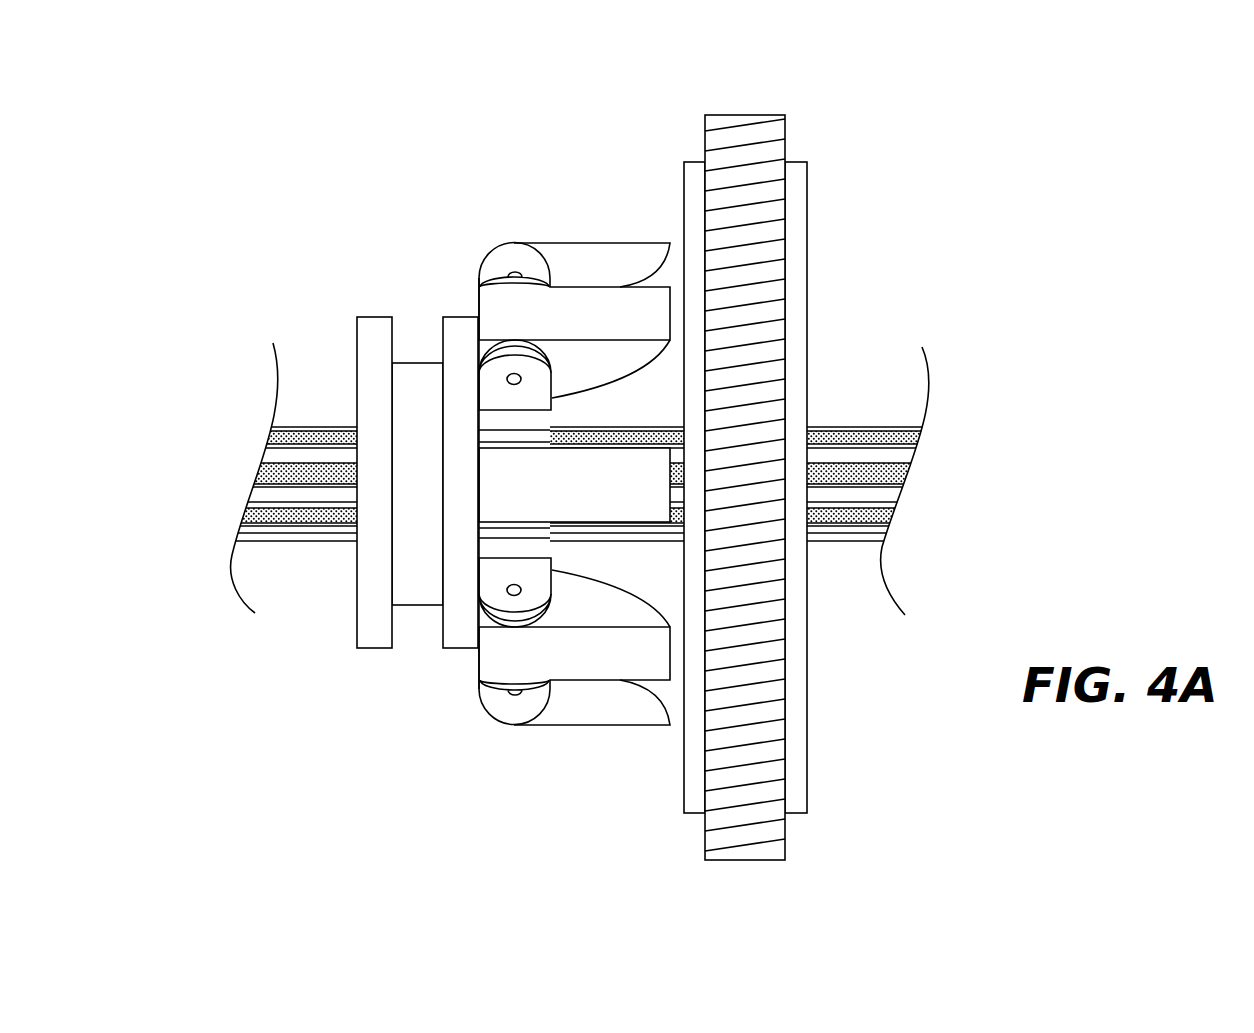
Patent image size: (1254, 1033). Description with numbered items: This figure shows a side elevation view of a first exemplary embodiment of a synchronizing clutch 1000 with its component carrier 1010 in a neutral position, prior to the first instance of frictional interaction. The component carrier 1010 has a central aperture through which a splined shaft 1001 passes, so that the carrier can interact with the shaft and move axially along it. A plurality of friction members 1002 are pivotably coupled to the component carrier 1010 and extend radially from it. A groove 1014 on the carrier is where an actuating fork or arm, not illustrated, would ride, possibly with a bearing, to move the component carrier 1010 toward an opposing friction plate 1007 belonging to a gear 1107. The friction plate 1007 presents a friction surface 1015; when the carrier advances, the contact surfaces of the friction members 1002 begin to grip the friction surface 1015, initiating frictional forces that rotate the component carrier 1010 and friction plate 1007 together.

The synchronizing clutch 1000 is at (235, 115).
The splined shaft 1001 is at (293, 425).
The friction member 1002 is at (456, 446).
The opposing friction plate 1007 is at (653, 445).
The component carrier 1010 is at (512, 401).
The groove 1014 is at (415, 608).
The friction surface 1015 is at (683, 213).
The gear 1107 is at (747, 113).